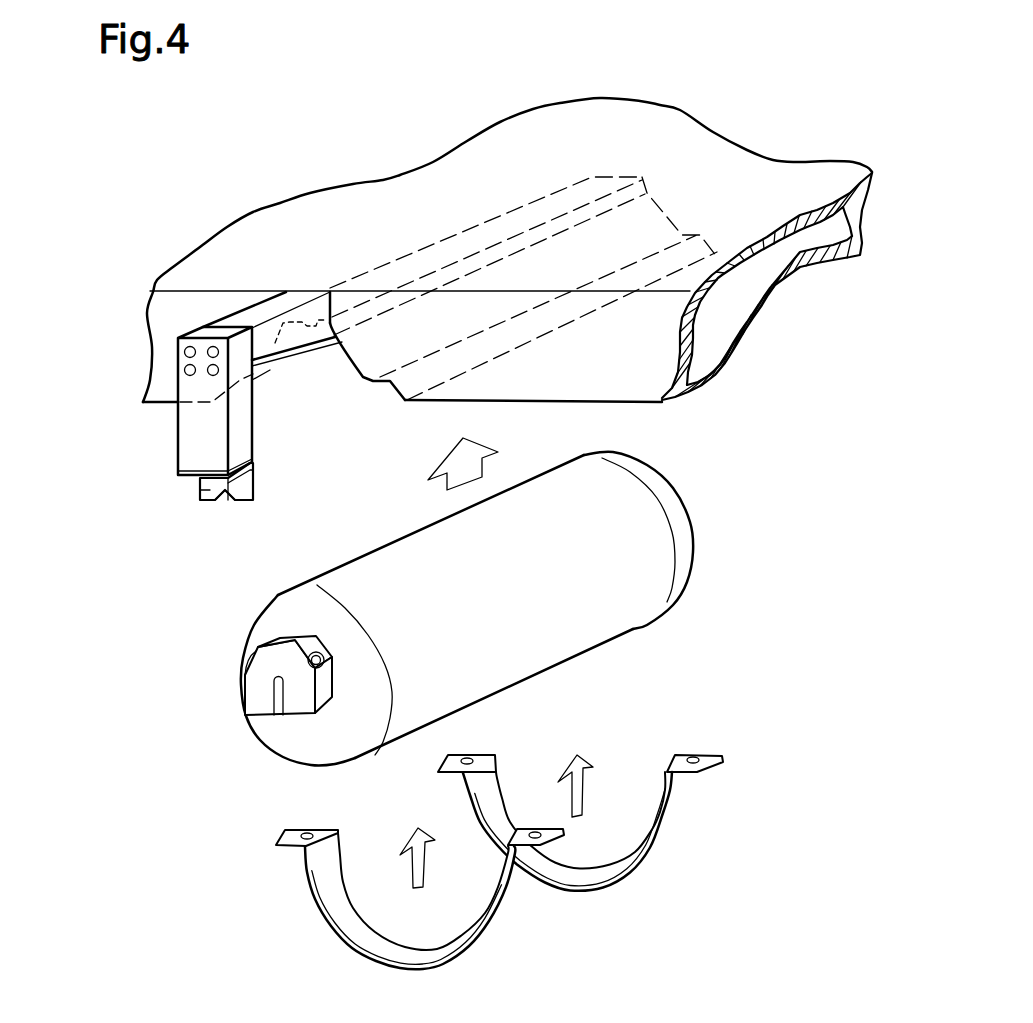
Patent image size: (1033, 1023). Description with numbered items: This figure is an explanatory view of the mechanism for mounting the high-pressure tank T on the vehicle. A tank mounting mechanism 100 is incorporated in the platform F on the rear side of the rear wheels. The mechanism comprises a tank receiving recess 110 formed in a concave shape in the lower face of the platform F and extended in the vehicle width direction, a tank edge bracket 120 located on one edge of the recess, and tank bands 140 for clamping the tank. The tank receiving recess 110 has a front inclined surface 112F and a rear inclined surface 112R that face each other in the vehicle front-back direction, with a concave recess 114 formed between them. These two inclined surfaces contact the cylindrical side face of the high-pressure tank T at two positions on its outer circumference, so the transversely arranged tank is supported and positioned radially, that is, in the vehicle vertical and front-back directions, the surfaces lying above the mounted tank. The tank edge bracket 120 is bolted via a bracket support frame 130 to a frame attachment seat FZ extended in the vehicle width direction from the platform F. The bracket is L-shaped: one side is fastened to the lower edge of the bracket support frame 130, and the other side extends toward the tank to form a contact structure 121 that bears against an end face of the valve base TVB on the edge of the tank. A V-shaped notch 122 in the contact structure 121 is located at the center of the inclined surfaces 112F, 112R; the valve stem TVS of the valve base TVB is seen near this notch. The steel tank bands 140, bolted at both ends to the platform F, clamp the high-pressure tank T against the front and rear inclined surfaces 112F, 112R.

The platform F is at (283, 215).
The frame attachment seat FZ is at (247, 318).
The tank mounting mechanism 100 is at (138, 505).
The tank receiving recess 110 is at (332, 397).
The front inclined surface 112F is at (280, 377).
The rear inclined surface 112R is at (358, 378).
The concave recess 114 is at (283, 330).
The tank edge bracket 120 is at (197, 497).
The contact structure 121 is at (253, 488).
The V-shaped notch 122 is at (223, 503).
The bracket support frame 130 is at (187, 428).
The tank bands 140 is at (507, 903).
The high-pressure tank T is at (618, 625).
The valve base TVB is at (252, 690).
The tank valve slot TVS is at (277, 713).